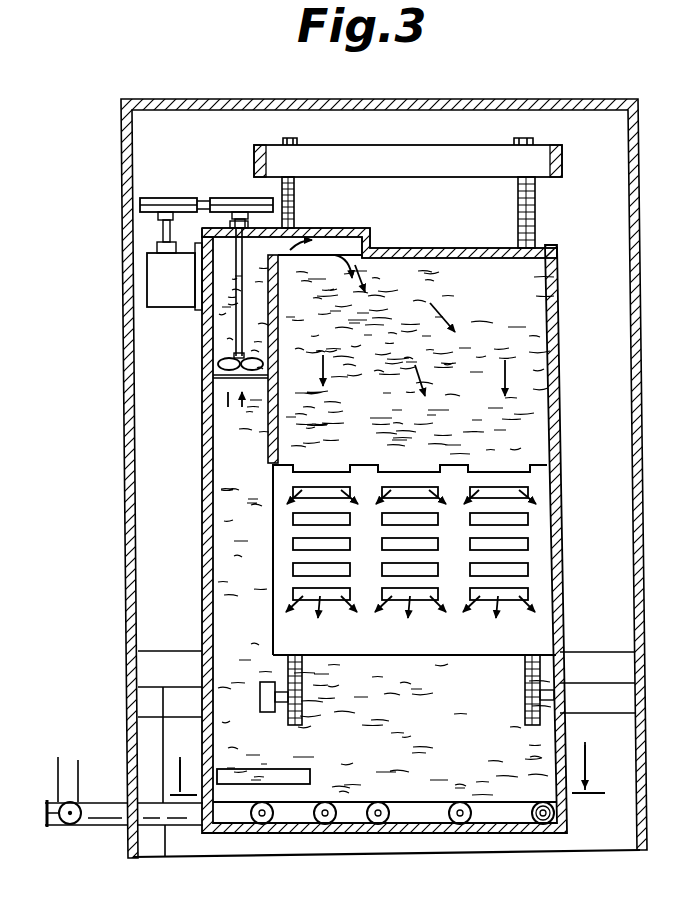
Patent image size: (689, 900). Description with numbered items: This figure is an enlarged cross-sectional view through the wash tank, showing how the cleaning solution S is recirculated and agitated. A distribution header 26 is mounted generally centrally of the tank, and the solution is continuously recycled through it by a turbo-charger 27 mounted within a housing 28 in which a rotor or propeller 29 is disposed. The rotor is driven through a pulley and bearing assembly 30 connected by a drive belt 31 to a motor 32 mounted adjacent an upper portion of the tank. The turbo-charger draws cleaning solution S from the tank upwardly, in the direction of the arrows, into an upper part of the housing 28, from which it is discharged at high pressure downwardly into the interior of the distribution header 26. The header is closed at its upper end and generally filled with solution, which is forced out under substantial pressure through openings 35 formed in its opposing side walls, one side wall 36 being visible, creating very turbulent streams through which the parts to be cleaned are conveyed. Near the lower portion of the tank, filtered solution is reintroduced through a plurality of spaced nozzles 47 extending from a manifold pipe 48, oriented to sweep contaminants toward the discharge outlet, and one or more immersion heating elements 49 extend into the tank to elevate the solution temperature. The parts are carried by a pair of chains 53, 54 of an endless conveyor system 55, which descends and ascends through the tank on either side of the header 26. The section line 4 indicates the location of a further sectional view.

The section line 4- 4 is at (391, 762).
The distribution header 26 is at (530, 635).
The turbo-charger 27 is at (198, 337).
The housing 28 is at (371, 241).
The rotor or propeller 29 is at (262, 362).
The pulley and bearing assembly 30 is at (238, 198).
The drive belt 31 is at (150, 200).
The motor 32 is at (150, 283).
The openings 35 is at (410, 490).
The side wall 36 is at (420, 647).
The nozzles 47 is at (383, 800).
The manifold pipe 48 is at (505, 805).
The immersion heating elements 49 is at (288, 771).
The chain 53 is at (294, 206).
The chain 54 is at (536, 206).
The endless conveyor system 55 is at (525, 681).
The cleaning solution S is at (398, 728).